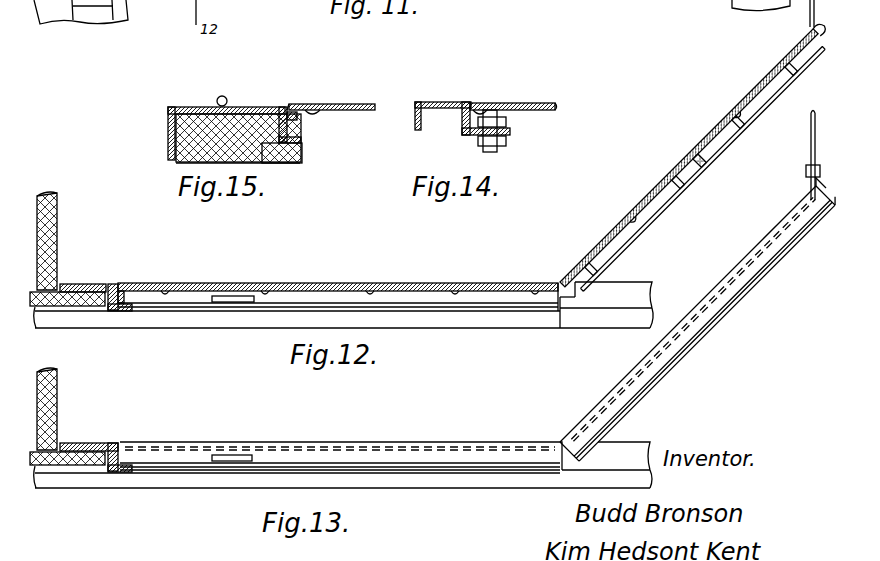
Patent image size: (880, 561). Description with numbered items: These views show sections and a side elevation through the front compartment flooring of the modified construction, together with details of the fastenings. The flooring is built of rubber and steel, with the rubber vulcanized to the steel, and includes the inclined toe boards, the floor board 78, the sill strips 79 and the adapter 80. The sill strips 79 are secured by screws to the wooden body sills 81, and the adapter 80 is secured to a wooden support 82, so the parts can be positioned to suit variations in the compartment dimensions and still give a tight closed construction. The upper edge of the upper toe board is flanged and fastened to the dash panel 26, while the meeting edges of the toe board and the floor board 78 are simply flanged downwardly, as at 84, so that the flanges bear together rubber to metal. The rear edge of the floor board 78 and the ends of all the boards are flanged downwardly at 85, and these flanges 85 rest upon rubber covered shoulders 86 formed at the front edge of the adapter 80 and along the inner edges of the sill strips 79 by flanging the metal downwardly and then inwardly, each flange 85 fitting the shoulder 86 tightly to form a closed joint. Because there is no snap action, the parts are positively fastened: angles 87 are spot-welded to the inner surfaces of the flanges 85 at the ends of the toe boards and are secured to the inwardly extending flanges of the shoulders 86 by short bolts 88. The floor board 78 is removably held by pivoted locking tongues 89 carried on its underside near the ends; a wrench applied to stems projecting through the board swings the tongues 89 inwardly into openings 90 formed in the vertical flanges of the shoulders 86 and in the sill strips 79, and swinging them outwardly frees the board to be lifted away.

In FIG. 12, the dash panel 26 is at (810, 6).
In FIG. 13, the dash panel 26 is at (811, 140).
In FIG. 15, the floor board 78 is at (338, 98).
In FIG. 14, the floor board 78 is at (524, 102).
In FIG. 12, the floor board 78 is at (338, 286).
In FIG. 15, the sill strip 79 is at (268, 106).
In FIG. 14, the sill strip 79 is at (442, 100).
In FIG. 13, the sill strip 79 is at (476, 442).
In FIG. 12, the adapter 80 is at (96, 284).
In FIG. 13, the adapter 80 is at (89, 432).
In FIG. 12, the wooden body sill 81 is at (645, 290).
In FIG. 13, the wooden body sill 81 is at (650, 442).
In FIG. 12, the wooden support 82 is at (86, 308).
In FIG. 12, the downwardly flanged meeting edge 84 is at (574, 300).
In FIG. 15, the flange 85 is at (297, 122).
In FIG. 12, the flange 85 is at (122, 298).
In FIG. 15, the rubber covered shoulder 86 is at (288, 142).
In FIG. 14, the rubber covered shoulder 86 is at (470, 136).
In FIG. 12, the rubber covered shoulder 86 is at (120, 312).
In FIG. 13, the rubber covered shoulder 86 is at (118, 473).
In FIG. 15, the angle 87 is at (302, 151).
In FIG. 14, the angle 87 is at (508, 124).
In FIG. 14, the short bolt 88 is at (512, 138).
In FIG. 12, the pivoted locking tongue 89 is at (231, 296).
In FIG. 13, the opening 90 is at (225, 455).